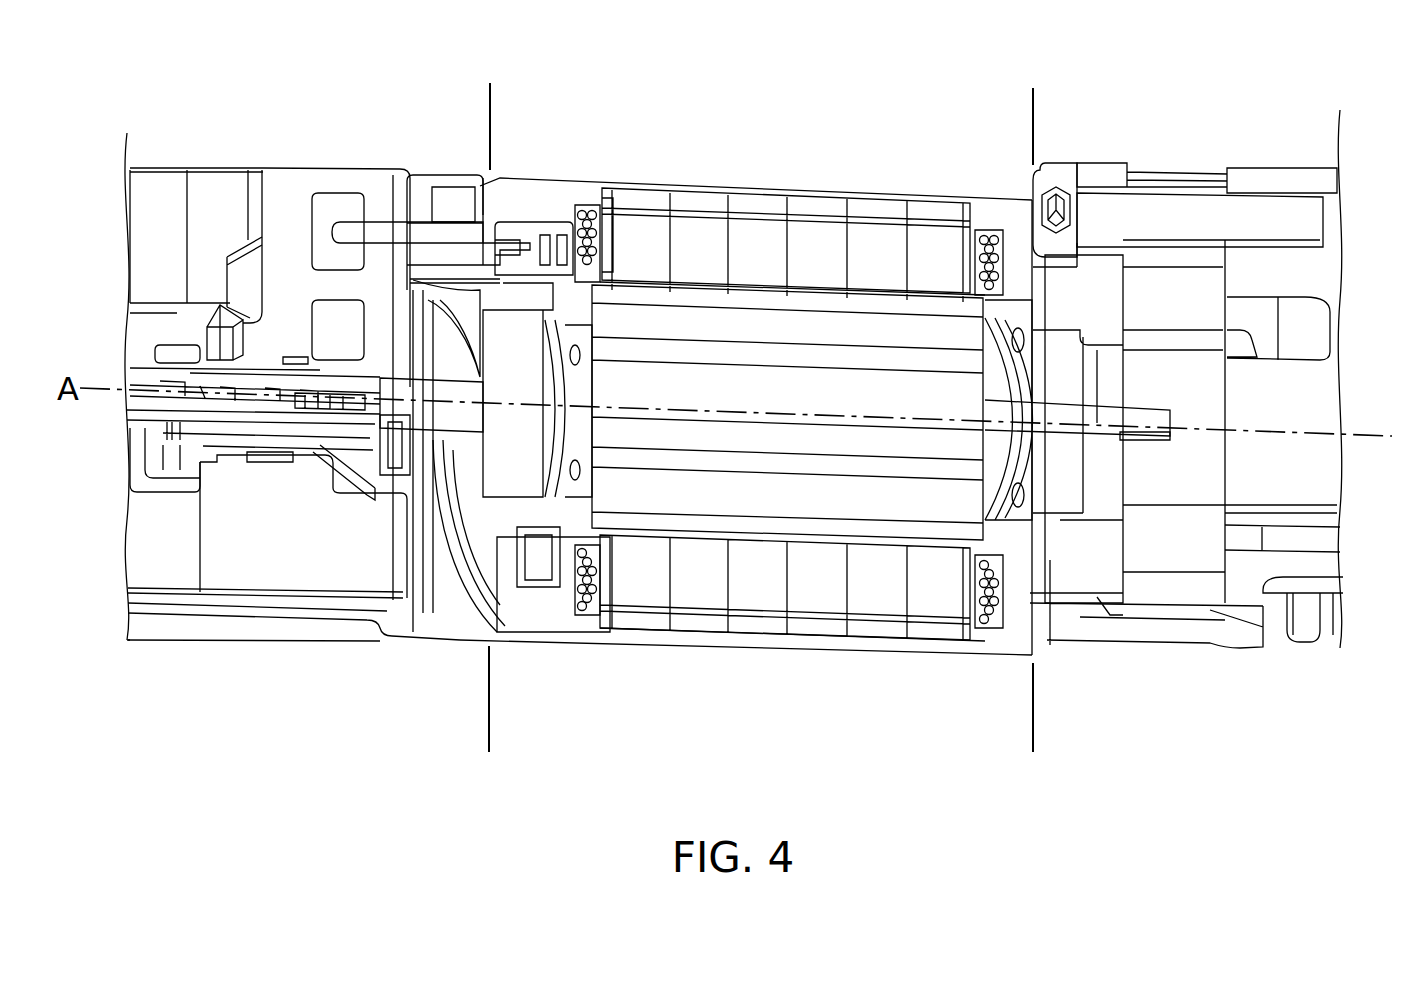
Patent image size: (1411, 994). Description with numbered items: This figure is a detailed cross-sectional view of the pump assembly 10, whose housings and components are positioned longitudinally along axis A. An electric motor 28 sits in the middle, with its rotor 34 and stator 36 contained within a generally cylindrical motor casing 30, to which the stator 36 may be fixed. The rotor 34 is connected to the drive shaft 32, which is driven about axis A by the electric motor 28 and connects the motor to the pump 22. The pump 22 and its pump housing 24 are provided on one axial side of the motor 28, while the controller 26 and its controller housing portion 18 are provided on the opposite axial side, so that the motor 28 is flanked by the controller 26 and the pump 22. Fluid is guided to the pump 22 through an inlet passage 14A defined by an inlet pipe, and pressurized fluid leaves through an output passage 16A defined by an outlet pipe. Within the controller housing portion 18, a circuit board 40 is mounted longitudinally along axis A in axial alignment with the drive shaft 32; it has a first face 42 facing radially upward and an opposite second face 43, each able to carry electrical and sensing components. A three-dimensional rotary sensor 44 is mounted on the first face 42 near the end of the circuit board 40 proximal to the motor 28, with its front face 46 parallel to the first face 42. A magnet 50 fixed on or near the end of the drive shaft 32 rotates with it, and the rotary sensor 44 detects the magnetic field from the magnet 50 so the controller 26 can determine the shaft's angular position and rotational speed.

The pump assembly 10 is at (286, 70).
The controller housing portion 18 is at (207, 165).
The magnet 50 is at (393, 385).
The first face 42 is at (187, 392).
The front face 46 is at (328, 388).
The second face 43 is at (184, 428).
The circuit board 40 is at (253, 412).
The 3D rotary sensor 44 is at (335, 390).
The controller 26 is at (207, 522).
The electric motor 28 is at (635, 660).
The motor casing 30 is at (980, 194).
The stator 36 is at (795, 560).
The rotor 34 is at (870, 500).
The drive shaft 32 is at (1002, 462).
The pump 22 is at (1132, 660).
The pump housing 24 is at (1284, 168).
The inlet passage 14A is at (1296, 314).
The output passage 16A is at (1322, 540).